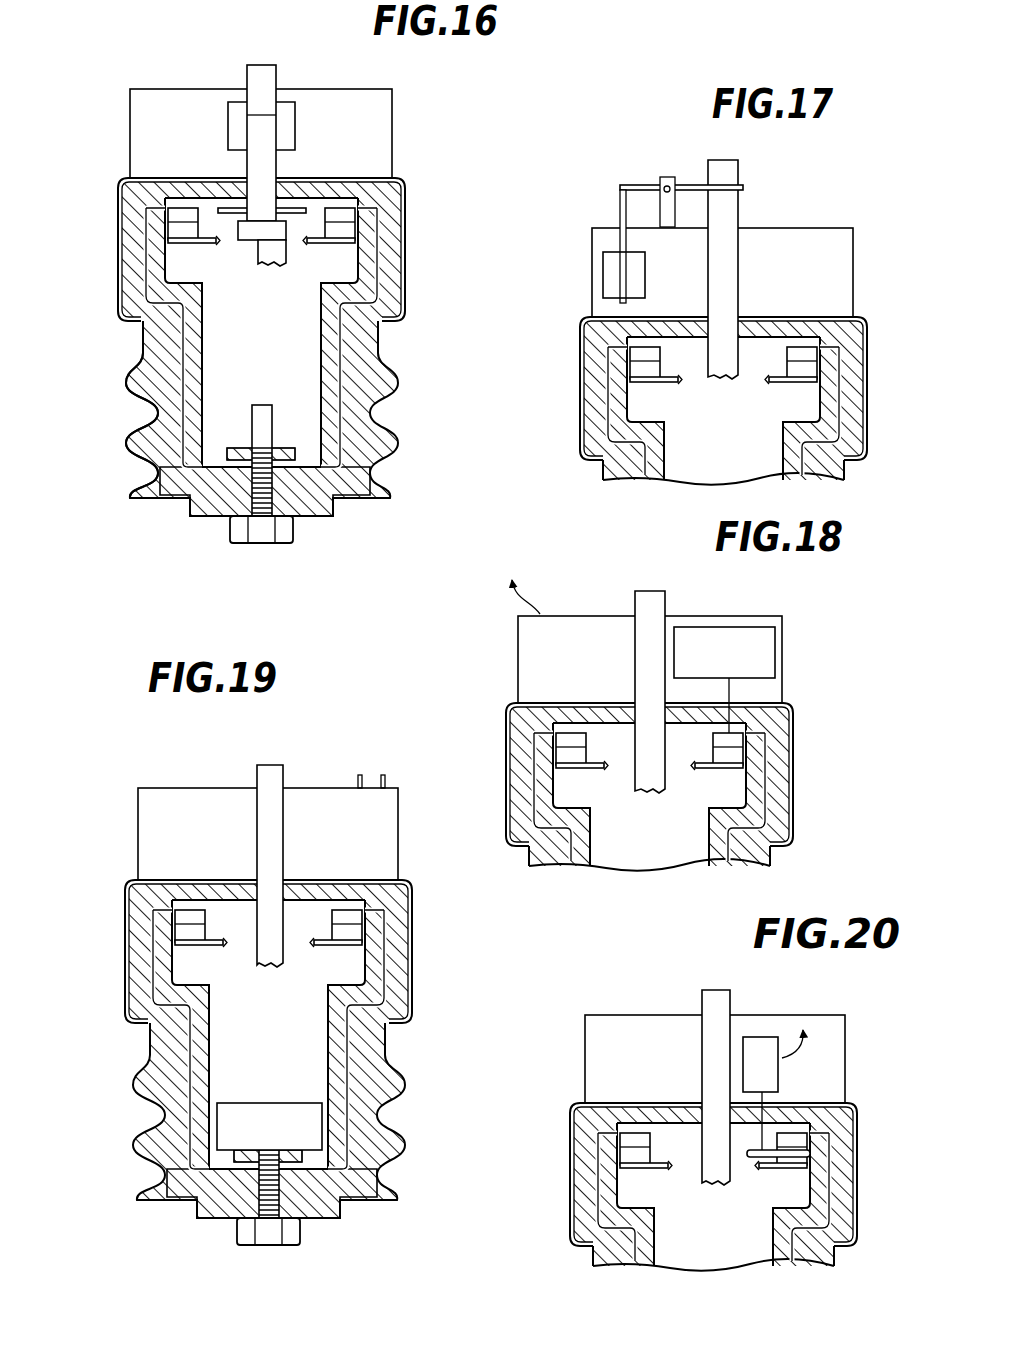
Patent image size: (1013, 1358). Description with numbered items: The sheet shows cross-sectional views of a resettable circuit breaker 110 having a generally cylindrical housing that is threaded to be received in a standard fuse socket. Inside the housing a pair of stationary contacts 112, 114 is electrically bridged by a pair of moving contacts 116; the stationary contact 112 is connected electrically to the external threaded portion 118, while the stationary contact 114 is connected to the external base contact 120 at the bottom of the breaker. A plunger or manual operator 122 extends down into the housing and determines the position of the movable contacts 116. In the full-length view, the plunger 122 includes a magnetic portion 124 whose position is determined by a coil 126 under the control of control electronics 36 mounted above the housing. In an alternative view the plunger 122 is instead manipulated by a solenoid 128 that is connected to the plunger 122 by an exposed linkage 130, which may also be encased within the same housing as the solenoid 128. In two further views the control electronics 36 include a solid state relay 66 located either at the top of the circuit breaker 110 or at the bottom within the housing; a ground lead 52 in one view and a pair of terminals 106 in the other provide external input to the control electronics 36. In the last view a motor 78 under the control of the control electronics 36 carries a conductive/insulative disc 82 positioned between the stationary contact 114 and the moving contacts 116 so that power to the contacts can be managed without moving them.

In FIG. 16, the control electronics 36 is at (362, 133).
In FIG. 17, the control electronics 36 is at (804, 275).
In FIG. 18, the control electronics 36 is at (483, 655).
In FIG. 19, the control electronics 36 is at (196, 748).
In FIG. 20, the control electronics 36 is at (835, 1030).
In FIG. 18, the ground lead 52 is at (529, 582).
In FIG. 18, the solid state relay 66 is at (734, 658).
In FIG. 19, the solid state relay 66 is at (285, 1136).
In FIG. 20, the motor 78 is at (762, 1045).
In FIG. 20, the conductive/insulative disc 82 is at (752, 1160).
In FIG. 19, the pair of terminals 106 is at (383, 775).
In FIG. 16, the circuit breaker 110 is at (410, 330).
In FIG. 17, the circuit breaker 110 is at (875, 335).
In FIG. 18, the circuit breaker 110 is at (800, 760).
In FIG. 19, the circuit breaker 110 is at (415, 905).
In FIG. 20, the circuit breaker 110 is at (563, 1237).
In FIG. 16, the stationary contact 112 is at (188, 213).
In FIG. 16, the stationary contact 114 is at (335, 217).
In FIG. 20, the stationary contact 114 is at (798, 1140).
In FIG. 16, the moving contacts 116 is at (180, 237).
In FIG. 20, the moving contacts 116 is at (798, 1165).
In FIG. 16, the external threaded portion 118 is at (150, 412).
In FIG. 16, the external base contact 120 is at (268, 535).
In FIG. 16, the plunger 122 is at (260, 70).
In FIG. 17, the plunger 122 is at (727, 165).
In FIG. 18, the plunger 122 is at (652, 592).
In FIG. 19, the plunger 122 is at (268, 765).
In FIG. 16, the magnetic portion 124 is at (268, 115).
In FIG. 16, the coil 126 is at (238, 108).
In FIG. 17, the solenoid 128 is at (608, 263).
In FIG. 17, the linkage 130 is at (688, 185).